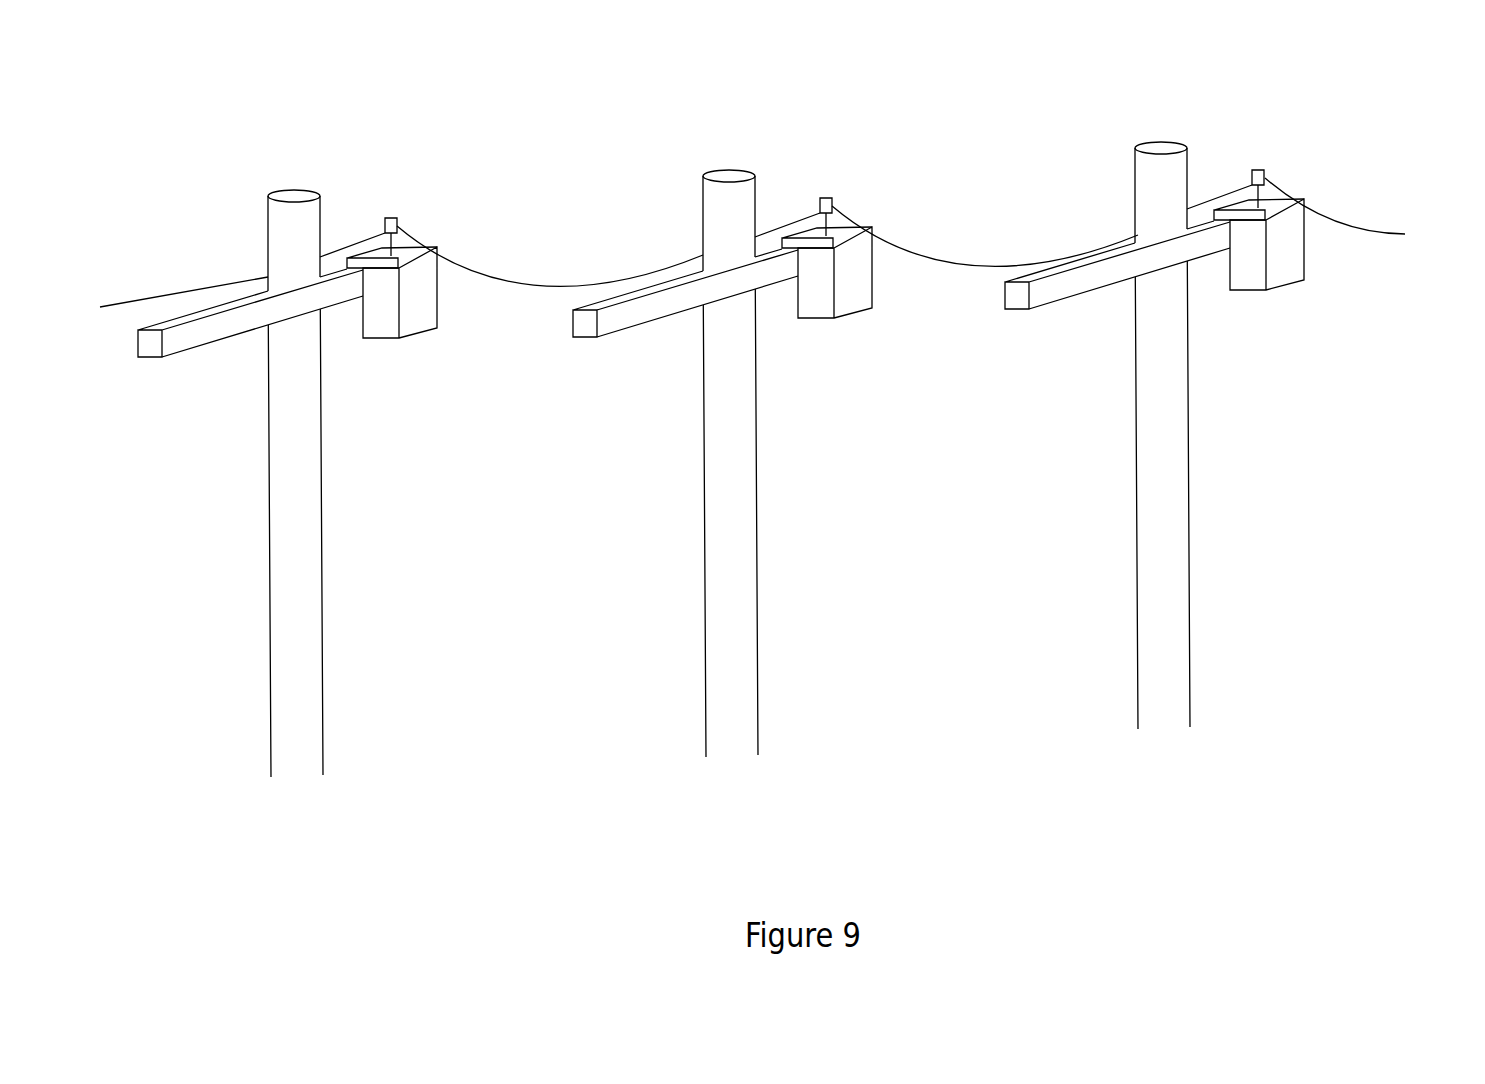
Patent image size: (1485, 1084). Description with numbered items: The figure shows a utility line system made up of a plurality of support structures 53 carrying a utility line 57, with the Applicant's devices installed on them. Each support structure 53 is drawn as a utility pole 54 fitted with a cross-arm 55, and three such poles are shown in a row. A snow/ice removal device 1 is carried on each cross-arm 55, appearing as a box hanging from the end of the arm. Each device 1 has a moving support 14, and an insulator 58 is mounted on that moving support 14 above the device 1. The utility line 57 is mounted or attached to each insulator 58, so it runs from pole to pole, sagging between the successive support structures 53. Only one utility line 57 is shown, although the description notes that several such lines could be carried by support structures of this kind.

The snow/ice removal device 1 is at (386, 340).
The moving support 14 is at (346, 257).
The support structure 53 is at (332, 492).
The utility pole 54 is at (271, 583).
The cross-arm 55 is at (331, 271).
The utility line 57 is at (507, 283).
The insulator 58 is at (385, 220).